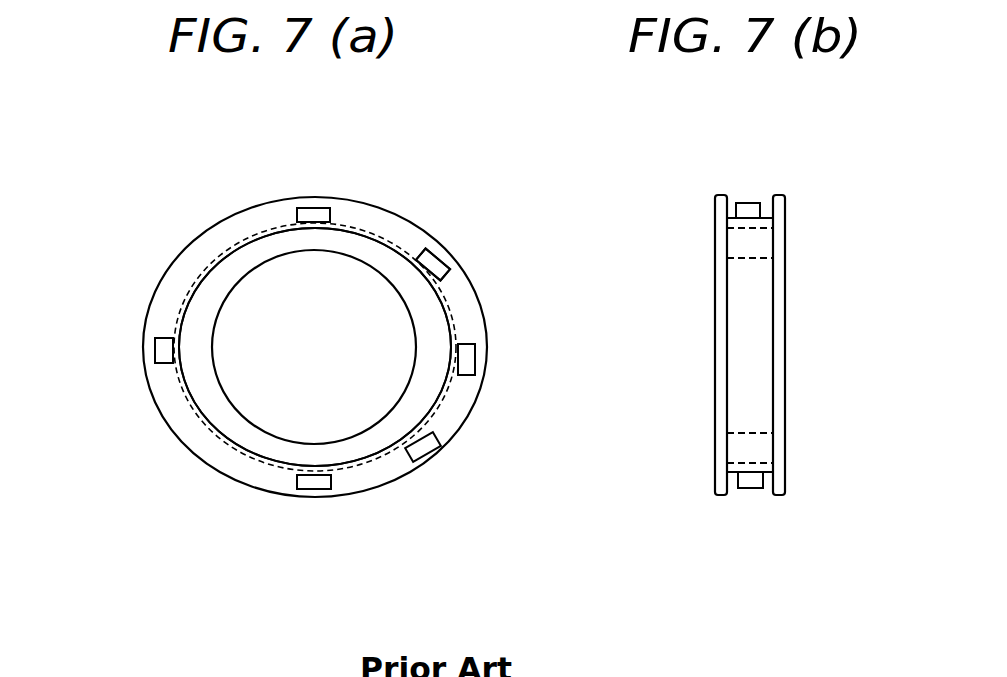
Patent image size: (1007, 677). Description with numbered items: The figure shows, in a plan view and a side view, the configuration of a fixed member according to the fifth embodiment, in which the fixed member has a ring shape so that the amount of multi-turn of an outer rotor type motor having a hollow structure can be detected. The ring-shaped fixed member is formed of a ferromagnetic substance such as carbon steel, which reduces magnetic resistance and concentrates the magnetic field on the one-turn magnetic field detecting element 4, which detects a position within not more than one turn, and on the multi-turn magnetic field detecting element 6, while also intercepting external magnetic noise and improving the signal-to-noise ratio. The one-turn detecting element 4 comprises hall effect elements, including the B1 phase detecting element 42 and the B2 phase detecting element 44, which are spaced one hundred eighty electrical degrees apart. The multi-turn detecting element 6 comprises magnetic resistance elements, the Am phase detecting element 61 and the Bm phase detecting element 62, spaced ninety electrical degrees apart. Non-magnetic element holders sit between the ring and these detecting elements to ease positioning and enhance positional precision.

The one-turn magnetic field detecting element 4 is at (313, 190).
The multi-turn magnetic field detecting element 6 is at (452, 254).
The B1 phase detecting element 42 is at (478, 362).
The B2 phase detecting element 44 is at (155, 352).
The Am phase detecting element 61 is at (448, 273).
The Bm phase detecting element 62 is at (416, 451).